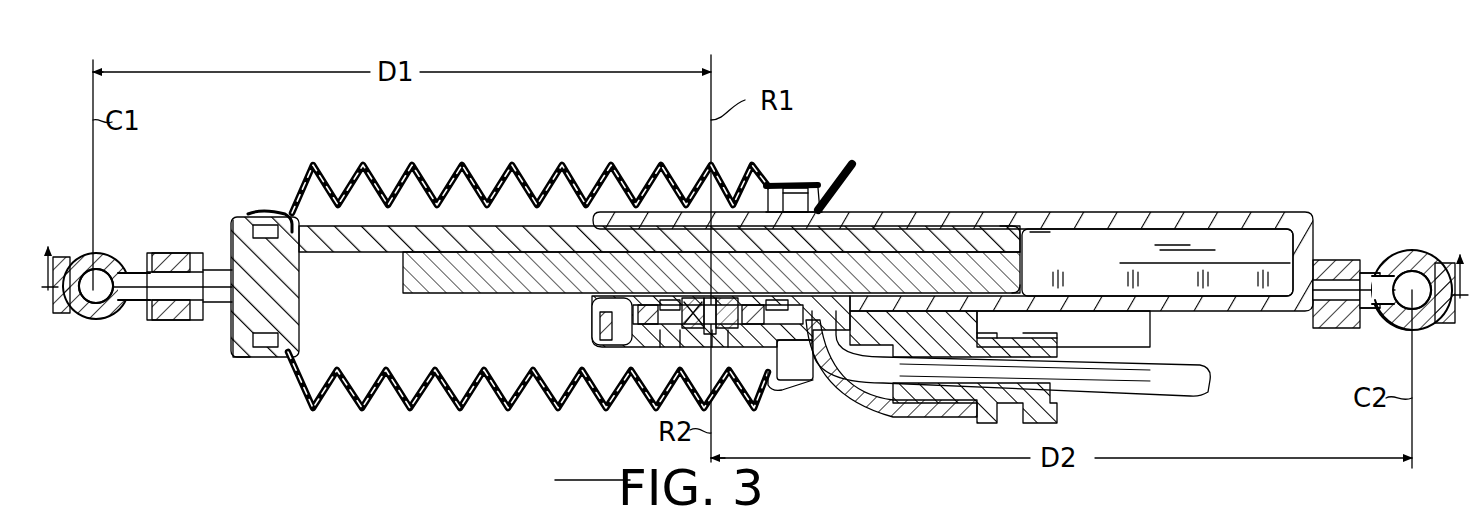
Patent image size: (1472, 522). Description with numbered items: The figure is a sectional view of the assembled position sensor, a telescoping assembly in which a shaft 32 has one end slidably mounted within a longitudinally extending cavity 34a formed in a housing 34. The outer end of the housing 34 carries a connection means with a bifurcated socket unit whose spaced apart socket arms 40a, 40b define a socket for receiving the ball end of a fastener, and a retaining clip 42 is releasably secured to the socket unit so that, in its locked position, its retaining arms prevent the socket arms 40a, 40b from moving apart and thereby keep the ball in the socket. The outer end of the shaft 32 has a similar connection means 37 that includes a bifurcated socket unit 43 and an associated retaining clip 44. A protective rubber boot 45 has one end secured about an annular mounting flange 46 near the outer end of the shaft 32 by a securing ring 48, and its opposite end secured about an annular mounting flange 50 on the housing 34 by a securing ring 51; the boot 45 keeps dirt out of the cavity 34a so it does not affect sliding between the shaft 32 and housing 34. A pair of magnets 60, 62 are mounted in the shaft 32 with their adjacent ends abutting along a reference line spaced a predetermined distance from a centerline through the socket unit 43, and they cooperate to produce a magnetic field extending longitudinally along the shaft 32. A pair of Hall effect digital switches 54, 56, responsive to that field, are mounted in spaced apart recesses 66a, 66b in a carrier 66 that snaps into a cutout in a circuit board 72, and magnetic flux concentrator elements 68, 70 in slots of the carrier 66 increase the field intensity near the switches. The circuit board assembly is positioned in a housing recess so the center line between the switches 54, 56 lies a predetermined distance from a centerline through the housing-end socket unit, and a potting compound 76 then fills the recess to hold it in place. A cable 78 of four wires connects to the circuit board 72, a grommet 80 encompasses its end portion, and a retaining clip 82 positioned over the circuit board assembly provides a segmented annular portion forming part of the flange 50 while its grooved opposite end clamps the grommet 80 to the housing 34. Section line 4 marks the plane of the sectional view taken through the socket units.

The section line 4- 4 is at (754, 254).
The shaft 32 is at (415, 300).
The housing 34 is at (1128, 210).
The longitudinally extending cavity 34a is at (1045, 232).
The connection means 37 is at (138, 250).
The socket arm 40a is at (1443, 268).
The socket arm 40b is at (1442, 322).
The retaining clip 42 is at (1328, 260).
The bifurcated socket unit 43 is at (96, 320).
The retaining clip 44 is at (170, 322).
The protective rubber boot 45 is at (535, 160).
The annular mounting flange 46 is at (235, 215).
The securing ring 48 is at (262, 205).
The annular mounting flange 50 is at (832, 152).
The securing ring 51 is at (795, 187).
The Hall effect digital switch 54 is at (692, 298).
The Hall effect digital switch 56 is at (745, 282).
The magnet 60 is at (485, 272).
The magnet 62 is at (1030, 276).
The carrier 66 is at (790, 365).
The recess 66a is at (654, 304).
The recess 66b is at (788, 304).
The magnetic flux concentrator element 68 is at (670, 349).
The magnetic flux concentrator element 70 is at (722, 349).
The circuit board 72 is at (604, 312).
The potting compound 76 is at (612, 345).
The cable 78 is at (1180, 400).
The grommet 80 is at (1040, 415).
The retaining clip 82 is at (880, 425).